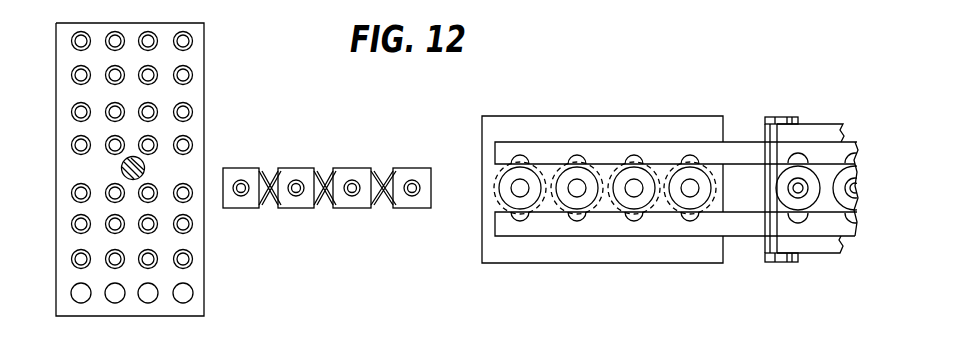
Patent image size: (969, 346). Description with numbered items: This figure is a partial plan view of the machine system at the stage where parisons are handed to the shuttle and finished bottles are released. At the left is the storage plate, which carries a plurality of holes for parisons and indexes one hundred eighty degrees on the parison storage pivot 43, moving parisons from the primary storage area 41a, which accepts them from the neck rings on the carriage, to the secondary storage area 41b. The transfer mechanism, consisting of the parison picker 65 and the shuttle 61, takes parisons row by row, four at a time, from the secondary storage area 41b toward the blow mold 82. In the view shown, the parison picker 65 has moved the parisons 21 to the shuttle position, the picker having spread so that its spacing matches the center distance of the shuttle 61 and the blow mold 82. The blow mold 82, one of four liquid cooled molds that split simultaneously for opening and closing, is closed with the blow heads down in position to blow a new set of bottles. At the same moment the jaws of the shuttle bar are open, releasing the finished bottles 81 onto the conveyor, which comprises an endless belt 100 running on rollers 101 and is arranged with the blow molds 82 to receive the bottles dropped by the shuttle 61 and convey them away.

The primary storage area 41a is at (193, 57).
The secondary storage area 41b is at (193, 276).
The parison storage pivot 43 is at (122, 166).
The parison picker 65 is at (291, 176).
The parison 21 is at (354, 196).
The blow mold 82 is at (645, 123).
The shuttle 61 is at (745, 223).
The finish bottle 81 is at (812, 197).
The roller 101 is at (782, 116).
The endless belt 100 is at (825, 126).